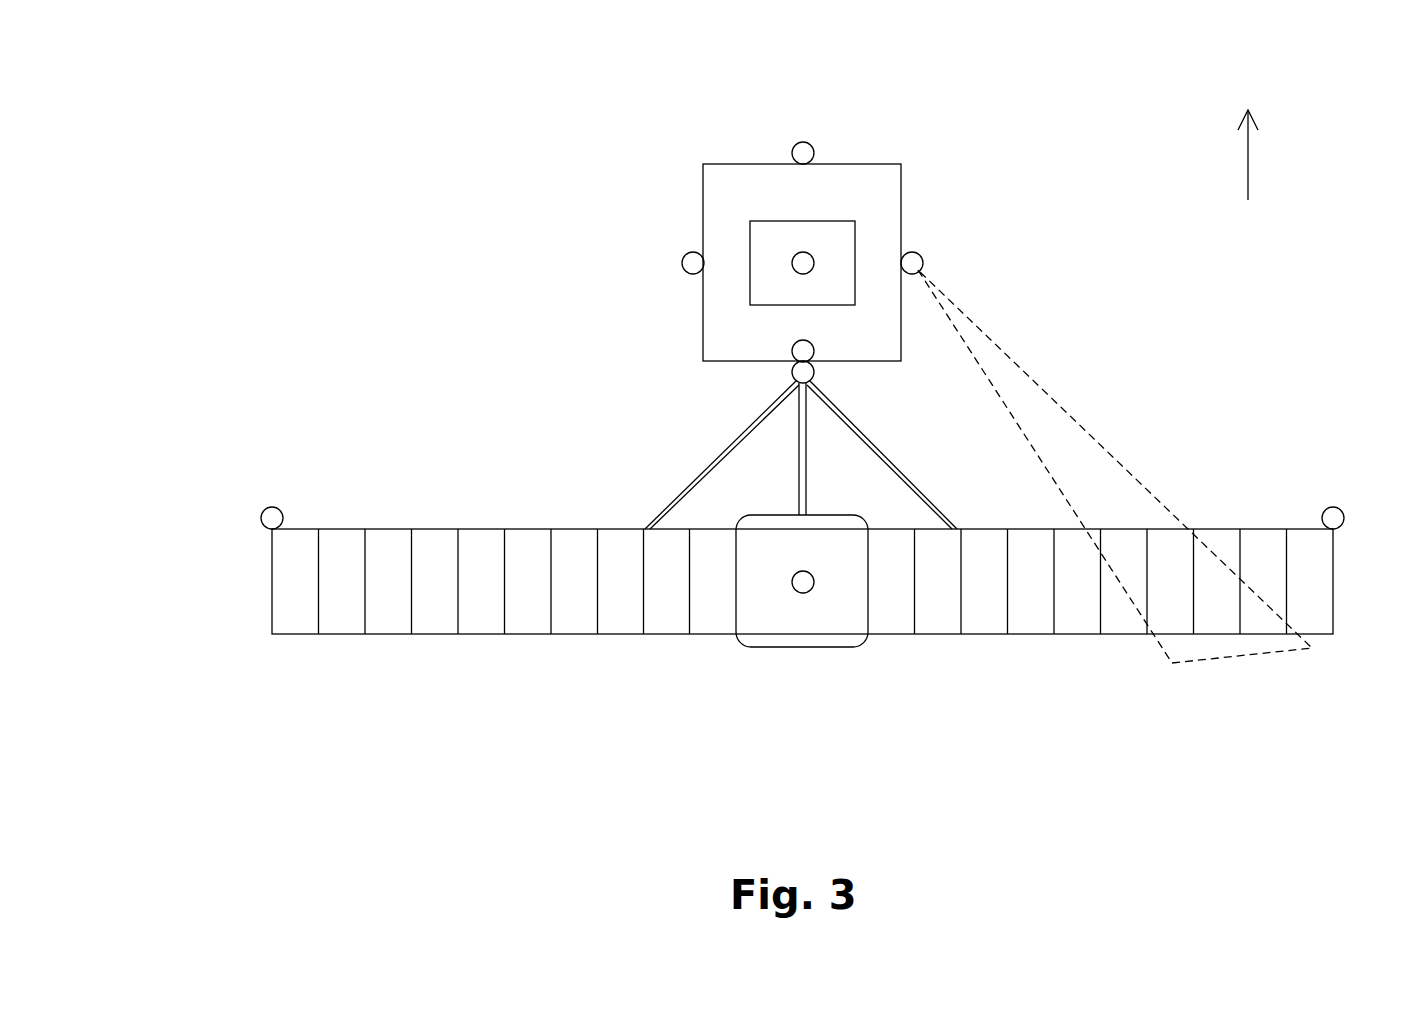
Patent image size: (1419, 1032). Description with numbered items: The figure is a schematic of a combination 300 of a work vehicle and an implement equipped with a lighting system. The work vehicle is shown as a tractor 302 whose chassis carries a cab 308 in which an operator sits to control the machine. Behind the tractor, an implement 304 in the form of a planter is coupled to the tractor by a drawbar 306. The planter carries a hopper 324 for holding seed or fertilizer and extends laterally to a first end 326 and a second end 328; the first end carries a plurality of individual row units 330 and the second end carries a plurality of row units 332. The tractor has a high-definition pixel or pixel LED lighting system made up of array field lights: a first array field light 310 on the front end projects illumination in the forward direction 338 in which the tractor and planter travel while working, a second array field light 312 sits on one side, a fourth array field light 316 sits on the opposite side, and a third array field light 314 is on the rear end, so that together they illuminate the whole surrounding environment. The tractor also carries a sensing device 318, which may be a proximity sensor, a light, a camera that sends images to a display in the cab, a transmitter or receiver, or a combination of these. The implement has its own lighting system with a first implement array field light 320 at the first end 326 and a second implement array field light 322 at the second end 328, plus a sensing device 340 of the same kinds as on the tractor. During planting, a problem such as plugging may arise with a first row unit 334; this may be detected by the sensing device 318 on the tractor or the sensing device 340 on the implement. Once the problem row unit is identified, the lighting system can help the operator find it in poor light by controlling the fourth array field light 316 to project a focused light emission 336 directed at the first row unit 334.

The combination 300 is at (404, 153).
The tractor 302 is at (672, 182).
The implement 304 is at (218, 601).
The drawbar 306 is at (795, 450).
The cab 308 is at (766, 221).
The first array field light 310 is at (803, 142).
The second array field light 312 is at (682, 263).
The third array field light 314 is at (813, 350).
The fourth array field light 316 is at (923, 262).
The sensing device 318 is at (803, 252).
The first implement array field light 320 is at (272, 507).
The second implement array field light 322 is at (1333, 507).
The hopper 324 is at (838, 647).
The first end 326 is at (548, 686).
The second end 328 is at (1098, 730).
The row units 330 is at (378, 622).
The row units 332 is at (1027, 622).
The first row unit 334 is at (1173, 622).
The focused light emission 336 is at (1060, 405).
The forward direction 338 is at (1248, 160).
The sensing device 340 is at (803, 593).